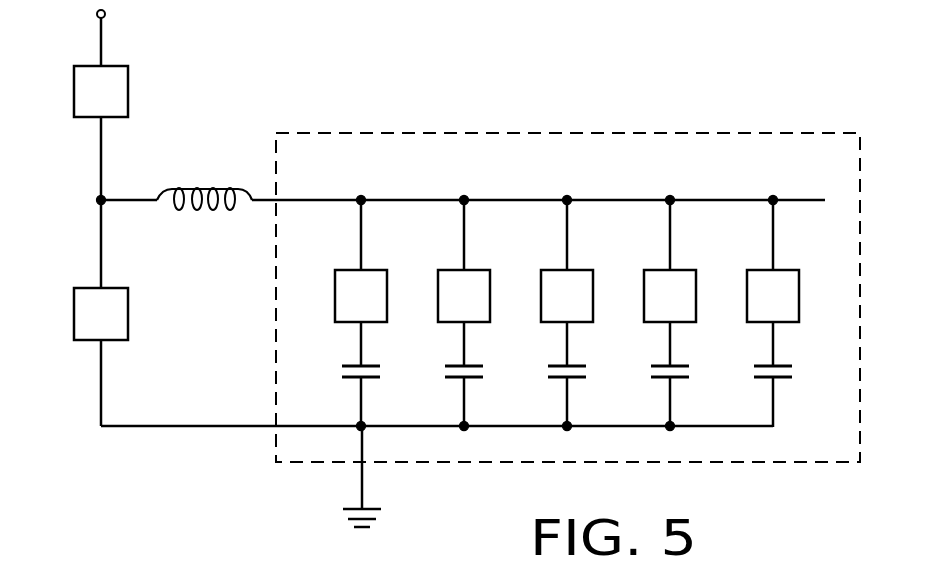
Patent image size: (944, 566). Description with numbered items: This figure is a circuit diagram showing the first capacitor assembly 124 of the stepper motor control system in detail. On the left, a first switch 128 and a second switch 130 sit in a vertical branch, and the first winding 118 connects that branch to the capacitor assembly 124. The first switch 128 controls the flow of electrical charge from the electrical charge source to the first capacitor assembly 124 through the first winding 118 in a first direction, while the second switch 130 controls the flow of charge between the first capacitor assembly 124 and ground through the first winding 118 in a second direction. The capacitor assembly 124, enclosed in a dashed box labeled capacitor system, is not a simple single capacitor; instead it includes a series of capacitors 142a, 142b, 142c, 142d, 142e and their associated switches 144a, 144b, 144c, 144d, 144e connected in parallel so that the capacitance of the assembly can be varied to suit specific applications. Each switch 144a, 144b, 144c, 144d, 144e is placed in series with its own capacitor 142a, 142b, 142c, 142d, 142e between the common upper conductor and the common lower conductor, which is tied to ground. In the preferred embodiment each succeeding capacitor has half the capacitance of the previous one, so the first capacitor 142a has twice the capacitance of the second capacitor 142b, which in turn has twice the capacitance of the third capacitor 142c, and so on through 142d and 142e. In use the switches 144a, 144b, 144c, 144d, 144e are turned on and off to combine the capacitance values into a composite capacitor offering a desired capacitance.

The first switch 128 is at (128, 85).
The second switch 130 is at (128, 308).
The first winding 118 is at (203, 187).
The first capacitor assembly 124 is at (413, 132).
The switch 144a is at (352, 268).
The switch 144b is at (455, 267).
The switch 144c is at (558, 267).
The switch 144d is at (653, 267).
The switch 144e is at (760, 268).
The first capacitor 142a is at (345, 368).
The second capacitor 142b is at (445, 370).
The third capacitor 142c is at (547, 370).
The capacitor 142d is at (652, 372).
The capacitor 142e is at (752, 372).